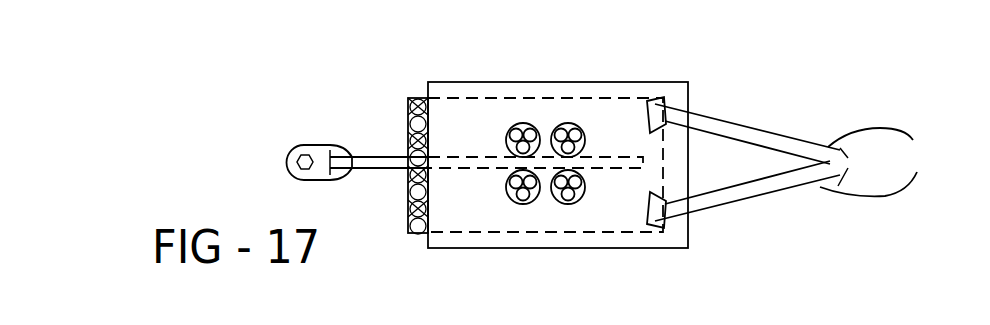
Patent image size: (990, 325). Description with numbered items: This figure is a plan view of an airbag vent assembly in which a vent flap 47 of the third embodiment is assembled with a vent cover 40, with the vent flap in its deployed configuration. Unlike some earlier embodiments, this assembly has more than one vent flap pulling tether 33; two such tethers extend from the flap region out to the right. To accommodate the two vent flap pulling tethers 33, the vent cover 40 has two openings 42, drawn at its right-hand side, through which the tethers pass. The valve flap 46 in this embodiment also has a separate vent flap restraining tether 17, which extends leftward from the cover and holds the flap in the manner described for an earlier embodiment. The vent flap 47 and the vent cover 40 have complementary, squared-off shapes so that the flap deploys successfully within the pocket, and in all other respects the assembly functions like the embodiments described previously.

The vent flap restraining tether 17 is at (380, 160).
The vent cover 40 is at (650, 82).
The vent flap 47 is at (418, 98).
The valve flap 46 is at (565, 123).
The openings 42 is at (660, 102).
The vent flap pulling tether 33 is at (886, 162).